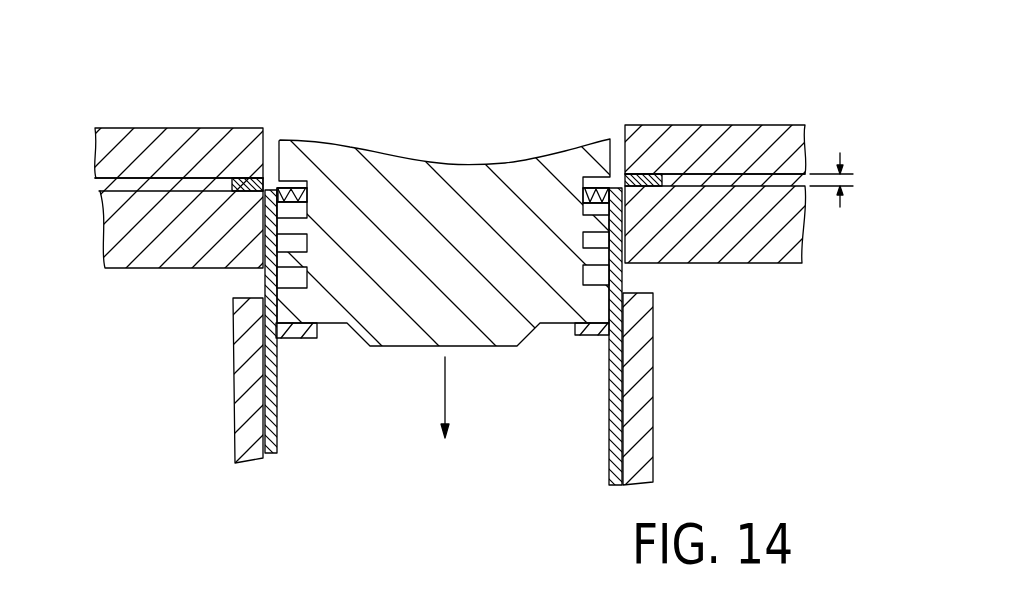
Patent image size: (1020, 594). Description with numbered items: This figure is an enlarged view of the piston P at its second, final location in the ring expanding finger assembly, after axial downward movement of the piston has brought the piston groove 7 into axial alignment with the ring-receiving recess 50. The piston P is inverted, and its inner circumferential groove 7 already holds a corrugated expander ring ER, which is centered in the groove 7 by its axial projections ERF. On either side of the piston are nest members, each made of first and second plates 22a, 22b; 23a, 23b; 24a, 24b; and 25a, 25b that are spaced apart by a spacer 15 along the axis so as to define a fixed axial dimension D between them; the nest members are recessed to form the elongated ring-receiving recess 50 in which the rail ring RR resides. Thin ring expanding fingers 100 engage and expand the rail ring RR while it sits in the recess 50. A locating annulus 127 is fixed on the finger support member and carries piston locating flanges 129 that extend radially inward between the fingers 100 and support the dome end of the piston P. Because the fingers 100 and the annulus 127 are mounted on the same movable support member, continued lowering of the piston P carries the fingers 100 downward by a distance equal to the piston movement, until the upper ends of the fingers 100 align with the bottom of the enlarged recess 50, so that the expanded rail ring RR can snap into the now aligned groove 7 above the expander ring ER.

The piston groove 7 is at (284, 183).
The spacer 15 is at (95, 185).
The ring-receiving recess 50 is at (240, 195).
The ring expanding fingers 100 is at (270, 427).
The locating annulus 127 is at (238, 398).
The piston locating flanges 129 is at (297, 338).
The first plate 22a is at (715, 105).
The first plate 23a is at (715, 105).
The first plate 24a is at (715, 105).
The first plate 25a is at (647, 140).
The second plate 22b is at (745, 278).
The second plate 23b is at (745, 278).
The second plate 24b is at (745, 278).
The second plate 25b is at (735, 253).
The piston P is at (452, 174).
The rail ring RR is at (243, 185).
The expander ring ER is at (308, 198).
The axial projections ERF is at (570, 176).
The fixed axial dimension D is at (853, 181).